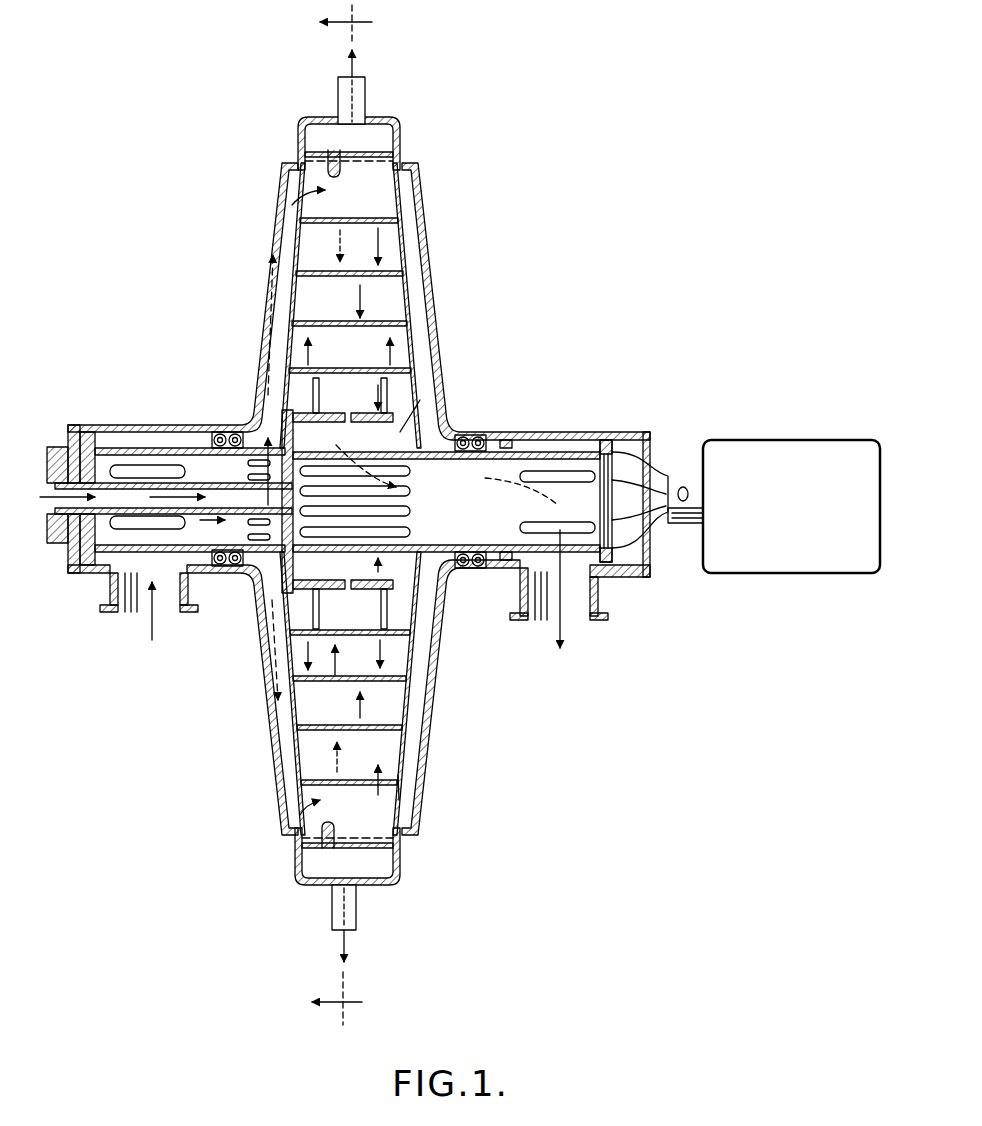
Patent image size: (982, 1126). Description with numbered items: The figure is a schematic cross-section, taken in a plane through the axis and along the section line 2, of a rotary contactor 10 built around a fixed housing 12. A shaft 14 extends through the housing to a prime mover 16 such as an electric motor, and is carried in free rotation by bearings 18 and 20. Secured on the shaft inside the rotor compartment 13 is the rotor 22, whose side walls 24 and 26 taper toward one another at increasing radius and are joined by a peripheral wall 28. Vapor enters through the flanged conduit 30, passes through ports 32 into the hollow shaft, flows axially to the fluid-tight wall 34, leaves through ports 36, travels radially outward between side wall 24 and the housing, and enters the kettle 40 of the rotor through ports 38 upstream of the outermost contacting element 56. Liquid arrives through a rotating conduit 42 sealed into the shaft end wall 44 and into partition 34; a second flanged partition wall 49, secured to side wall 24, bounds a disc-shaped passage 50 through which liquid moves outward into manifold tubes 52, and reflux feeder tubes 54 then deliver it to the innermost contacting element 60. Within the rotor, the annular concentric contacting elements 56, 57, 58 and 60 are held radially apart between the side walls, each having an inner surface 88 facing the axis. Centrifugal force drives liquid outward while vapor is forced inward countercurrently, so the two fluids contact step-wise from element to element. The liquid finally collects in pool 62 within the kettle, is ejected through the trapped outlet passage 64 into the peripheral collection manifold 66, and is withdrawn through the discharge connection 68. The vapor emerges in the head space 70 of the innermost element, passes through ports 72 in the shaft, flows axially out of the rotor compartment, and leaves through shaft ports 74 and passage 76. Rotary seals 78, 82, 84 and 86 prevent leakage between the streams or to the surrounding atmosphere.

The section line 2 is at (352, 515).
The rotary contactor 10 is at (268, 253).
The fixed housing 12 is at (425, 752).
The rotor compartment 13 is at (404, 787).
The shaft 14 is at (346, 553).
The prime mover 16 is at (762, 462).
The bearing 18 is at (227, 434).
The bearing 20 is at (467, 437).
The rotor 22 is at (392, 262).
The side wall 24 is at (292, 735).
The side wall 26 is at (404, 715).
The peripheral wall 28 is at (362, 852).
The flanged conduit 30 is at (170, 606).
The ports 32 is at (185, 548).
The fluid-tight wall 34 is at (248, 522).
The ports 36 is at (247, 466).
The ports 38 is at (330, 195).
The kettle 40 is at (375, 186).
The rotating conduit 42 is at (176, 447).
The shaft end wall 44 is at (108, 452).
The partition wall 49 is at (290, 440).
The passage 50 is at (268, 592).
The manifold tubes 52 is at (345, 423).
The reflux feeder tubes 54 is at (320, 394).
The contacting element 56 is at (396, 224).
The contacting element 57 is at (399, 274).
The contacting element 58 is at (400, 322).
The contacting element 60 is at (400, 370).
The pool 62 is at (306, 156).
The trapped outlet passage 64 is at (334, 152).
The peripheral collection manifold 66 is at (330, 132).
The discharge connection 68 is at (368, 92).
The head space 70 is at (420, 400).
The ports 72 is at (403, 511).
The shaft ports 74 is at (555, 478).
The passage 76 is at (598, 596).
The rotary seal 78 is at (100, 430).
The rotary seal 82 is at (506, 440).
The rotary seal 84 is at (606, 432).
The rotary seal 86 is at (398, 845).
The inner surface 88 is at (300, 418).